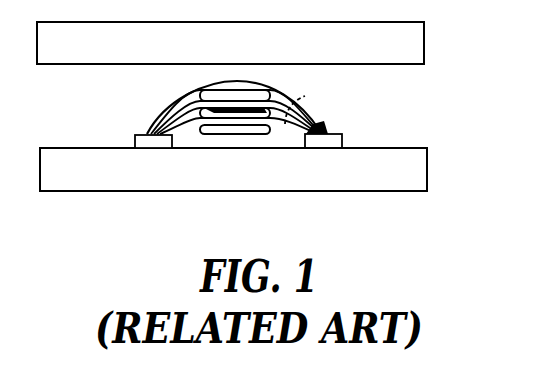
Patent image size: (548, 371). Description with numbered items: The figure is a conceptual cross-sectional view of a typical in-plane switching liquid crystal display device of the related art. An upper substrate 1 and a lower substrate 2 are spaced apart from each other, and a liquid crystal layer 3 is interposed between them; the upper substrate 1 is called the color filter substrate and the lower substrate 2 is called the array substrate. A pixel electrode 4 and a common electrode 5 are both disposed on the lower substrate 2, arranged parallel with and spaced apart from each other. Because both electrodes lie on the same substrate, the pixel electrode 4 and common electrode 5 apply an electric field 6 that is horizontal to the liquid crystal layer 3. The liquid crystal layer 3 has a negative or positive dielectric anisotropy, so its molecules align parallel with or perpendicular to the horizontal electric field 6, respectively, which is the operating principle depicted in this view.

The upper substrate 1 is at (414, 49).
The lower substrate 2 is at (422, 168).
The liquid crystal layer 3 is at (232, 131).
The pixel electrode 4 is at (137, 141).
The common electrode 5 is at (340, 136).
The electric field 6 is at (304, 98).